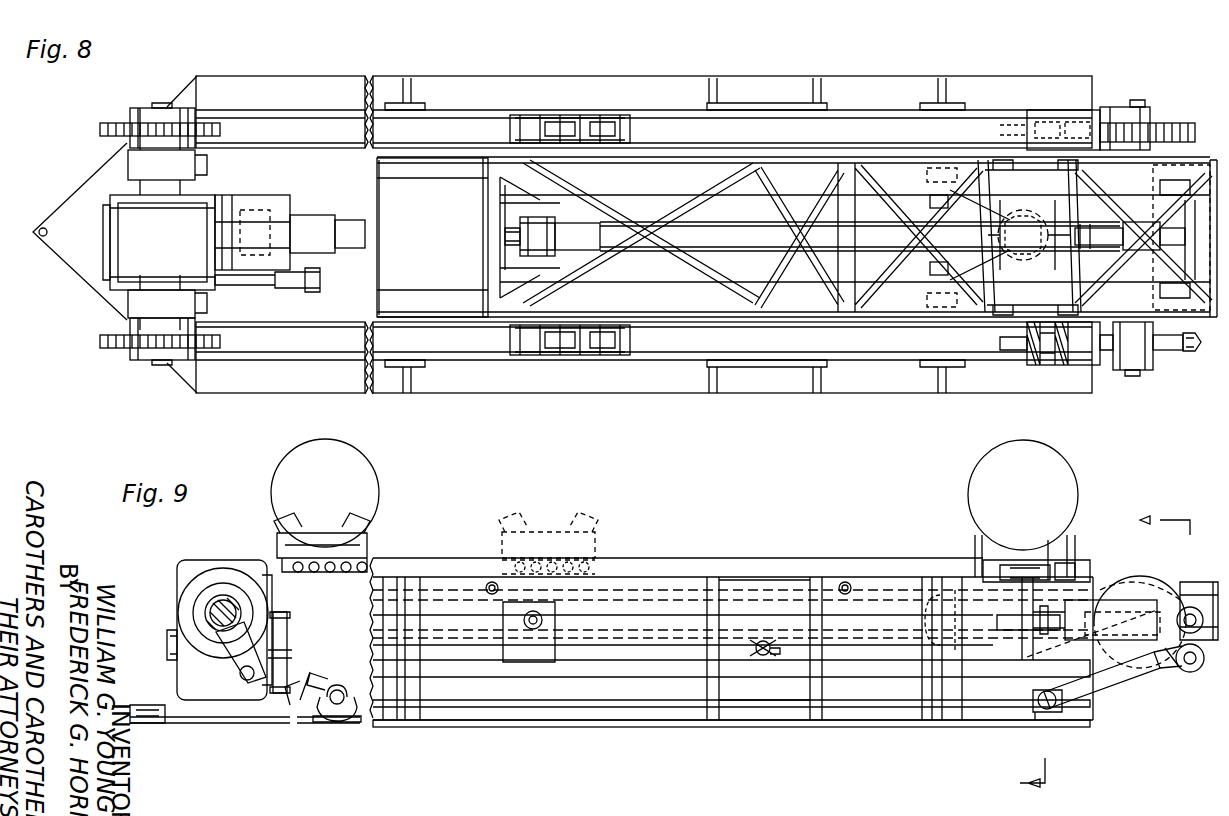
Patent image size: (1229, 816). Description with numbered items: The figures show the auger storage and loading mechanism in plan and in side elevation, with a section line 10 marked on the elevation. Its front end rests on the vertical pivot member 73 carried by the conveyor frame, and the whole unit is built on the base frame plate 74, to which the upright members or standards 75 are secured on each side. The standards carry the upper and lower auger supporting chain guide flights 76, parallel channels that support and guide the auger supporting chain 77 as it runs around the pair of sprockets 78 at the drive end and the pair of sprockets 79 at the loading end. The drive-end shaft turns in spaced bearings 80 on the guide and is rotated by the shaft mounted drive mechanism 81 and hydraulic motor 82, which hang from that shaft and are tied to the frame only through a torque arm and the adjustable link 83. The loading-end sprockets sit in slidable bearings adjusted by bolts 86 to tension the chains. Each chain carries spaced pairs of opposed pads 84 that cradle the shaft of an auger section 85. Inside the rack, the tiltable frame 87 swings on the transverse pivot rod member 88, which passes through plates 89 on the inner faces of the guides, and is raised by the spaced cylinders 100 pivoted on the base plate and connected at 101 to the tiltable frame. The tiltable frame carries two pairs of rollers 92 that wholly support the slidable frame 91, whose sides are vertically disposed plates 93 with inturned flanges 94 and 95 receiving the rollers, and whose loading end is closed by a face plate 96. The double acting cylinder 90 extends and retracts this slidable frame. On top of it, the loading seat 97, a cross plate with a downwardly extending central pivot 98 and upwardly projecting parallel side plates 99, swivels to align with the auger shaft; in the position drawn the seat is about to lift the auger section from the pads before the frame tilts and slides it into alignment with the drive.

In FIG. 9, the section line 10 is at (1087, 653).
In FIG. 9, the vertical pivot member 73 is at (154, 702).
In FIG. 8, the base frame plate 74 is at (262, 66).
In FIG. 9, the base frame plate 74 is at (190, 738).
In FIG. 8, the upright members or standards 75 is at (410, 78).
In FIG. 9, the upright members or standards 75 is at (403, 718).
In FIG. 8, the auger supporting chain guide flights 76 is at (326, 104).
In FIG. 9, the auger supporting chain guide flights 76 is at (376, 554).
In FIG. 8, the auger supporting chain 77 is at (568, 122).
In FIG. 9, the auger supporting chain 77 is at (318, 586).
In FIG. 8, the sprockets at the drive end 78 is at (116, 124).
In FIG. 8, the sprockets at the auger section loading end 79 is at (1192, 126).
In FIG. 9, the sprockets at the auger section loading end 79 is at (1122, 564).
In FIG. 8, the spaced bearings 80 is at (130, 172).
In FIG. 9, the spaced bearings 80 is at (210, 606).
In FIG. 8, the shaft mounted drive mechanism 81 is at (182, 242).
In FIG. 9, the shaft mounted drive mechanism 81 is at (188, 582).
In FIG. 8, the hydraulic motor 82 is at (308, 208).
In FIG. 9, the hydraulic motor 82 is at (282, 632).
In FIG. 9, the adjustable link 83 is at (320, 676).
In FIG. 9, the opposed pads 84 is at (348, 536).
In FIG. 9, the auger section 85 is at (378, 488).
In FIG. 8, the bolts 86 is at (1056, 110).
In FIG. 9, the bolts 86 is at (1068, 622).
In FIG. 8, the tiltable frame 87 is at (506, 212).
In FIG. 8, the transverse pivot rod member 88 is at (776, 260).
In FIG. 9, the transverse pivot rod member 88 is at (758, 642).
In FIG. 8, the plates 89 is at (830, 150).
In FIG. 9, the plates 89 is at (735, 586).
In FIG. 8, the double acting cylinder 90 is at (612, 238).
In FIG. 9, the double acting cylinder 90 is at (622, 614).
In FIG. 8, the slidable frame 91 is at (490, 245).
In FIG. 9, the slidable frame 91 is at (706, 550).
In FIG. 8, the rollers 92 is at (926, 162).
In FIG. 9, the rollers 92 is at (916, 624).
In FIG. 8, the vertically disposed plates 93 is at (428, 136).
In FIG. 9, the vertically disposed plates 93 is at (442, 614).
In FIG. 8, the inturned spaced flange 94 is at (390, 210).
In FIG. 9, the inturned spaced flange 94 is at (440, 598).
In FIG. 9, the inturned spaced flange 95 is at (450, 640).
In FIG. 8, the face plate 96 is at (1201, 341).
In FIG. 9, the face plate 96 is at (1192, 668).
In FIG. 8, the loading seat 97 is at (1066, 238).
In FIG. 9, the loading seat 97 is at (1055, 545).
In FIG. 8, the central pivot 98 is at (980, 238).
In FIG. 9, the central pivot 98 is at (1010, 562).
In FIG. 8, the parallel side plates 99 is at (978, 162).
In FIG. 9, the parallel side plates 99 is at (978, 544).
In FIG. 8, the spaced cylinders 100 is at (1130, 288).
In FIG. 9, the spaced cylinders 100 is at (1116, 710).
In FIG. 9, the pivotal connection 101 is at (1174, 670).